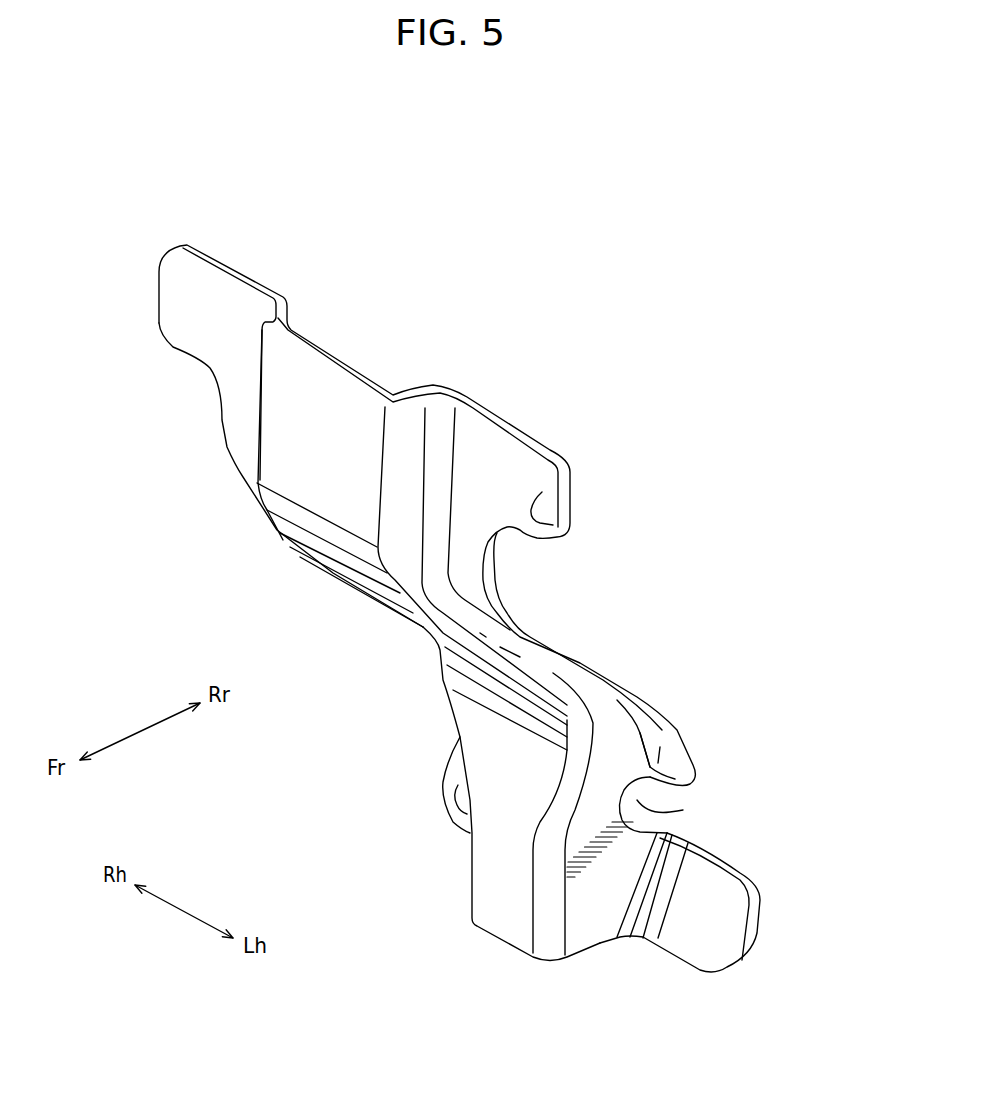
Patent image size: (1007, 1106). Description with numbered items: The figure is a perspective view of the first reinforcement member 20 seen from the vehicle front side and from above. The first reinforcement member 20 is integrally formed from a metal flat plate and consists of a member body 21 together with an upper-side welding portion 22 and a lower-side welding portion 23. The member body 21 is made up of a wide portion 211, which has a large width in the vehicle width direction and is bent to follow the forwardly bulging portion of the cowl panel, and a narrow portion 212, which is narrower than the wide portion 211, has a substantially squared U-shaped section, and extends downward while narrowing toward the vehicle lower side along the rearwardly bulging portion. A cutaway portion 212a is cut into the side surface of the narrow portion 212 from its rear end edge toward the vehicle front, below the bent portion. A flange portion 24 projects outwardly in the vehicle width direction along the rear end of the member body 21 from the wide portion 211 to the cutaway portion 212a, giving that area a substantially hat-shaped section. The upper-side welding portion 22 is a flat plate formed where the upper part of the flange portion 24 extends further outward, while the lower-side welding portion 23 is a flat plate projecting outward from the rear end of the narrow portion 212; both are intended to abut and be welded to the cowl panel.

The first reinforcement member 20 is at (139, 222).
The member body 21 is at (427, 616).
The wide portion 211 is at (330, 398).
The narrow portion 212 is at (508, 870).
The cutaway portion 212a is at (683, 810).
The upper-side welding portion 22 is at (182, 303).
The lower-side welding portion 23 is at (458, 812).
The flange portion 24 is at (662, 765).